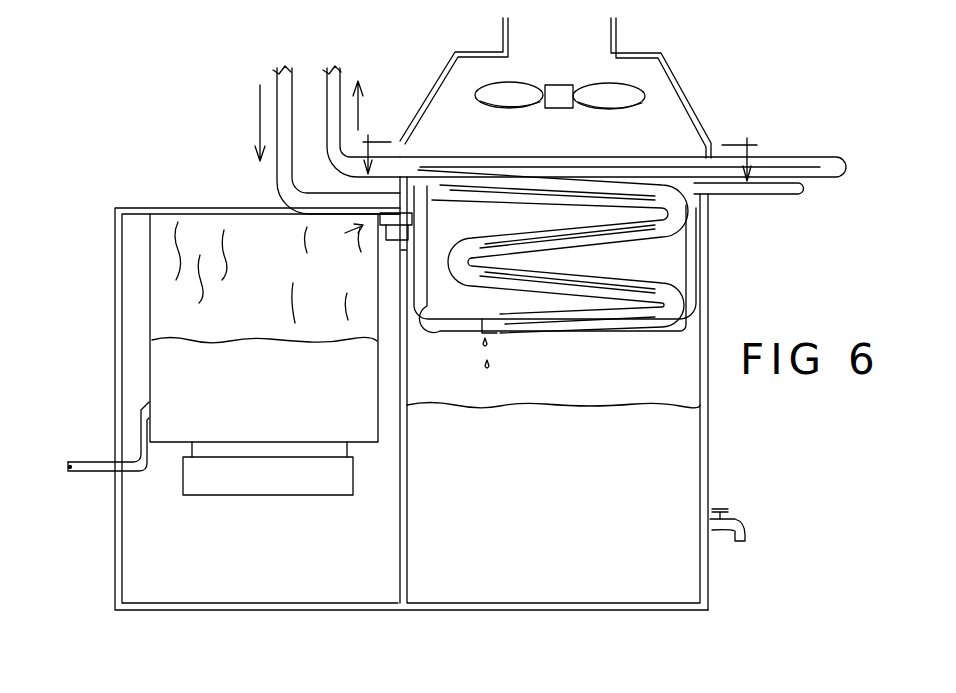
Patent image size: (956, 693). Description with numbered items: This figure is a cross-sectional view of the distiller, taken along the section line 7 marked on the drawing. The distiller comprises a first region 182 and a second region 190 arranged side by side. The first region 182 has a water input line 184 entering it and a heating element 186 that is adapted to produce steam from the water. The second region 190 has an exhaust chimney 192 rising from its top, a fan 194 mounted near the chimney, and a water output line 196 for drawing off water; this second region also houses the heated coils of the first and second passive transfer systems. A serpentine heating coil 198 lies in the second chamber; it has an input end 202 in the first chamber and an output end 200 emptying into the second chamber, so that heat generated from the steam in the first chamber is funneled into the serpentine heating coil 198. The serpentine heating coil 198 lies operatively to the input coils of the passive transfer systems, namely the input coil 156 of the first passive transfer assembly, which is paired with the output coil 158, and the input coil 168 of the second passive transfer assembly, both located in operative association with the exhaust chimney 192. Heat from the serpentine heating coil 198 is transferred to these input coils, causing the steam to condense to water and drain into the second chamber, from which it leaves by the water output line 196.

The section line 7 is at (560, 143).
The input coil 156 is at (338, 82).
The output coil 158 is at (275, 78).
The input coil 168 is at (692, 250).
The first region 182 is at (182, 278).
The water input line 184 is at (90, 462).
The heating element 186 is at (210, 478).
The second region 190 is at (668, 487).
The exhaust chimney 192 is at (567, 42).
The fan 194 is at (640, 93).
The water output line 196 is at (740, 527).
The serpentine heating coil 198 is at (410, 300).
The output end 200 is at (377, 222).
The input end 202 is at (497, 334).